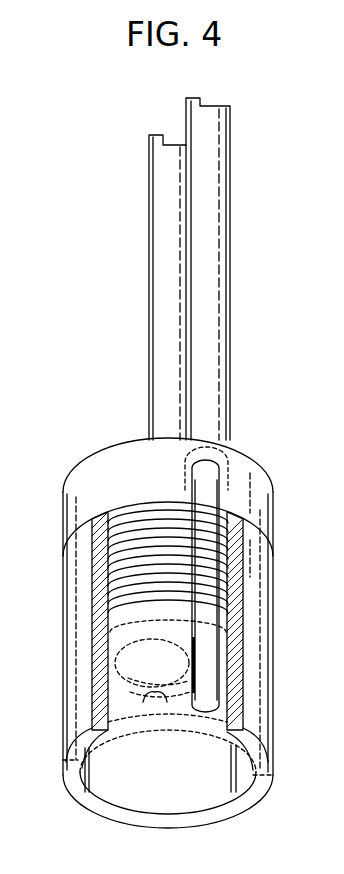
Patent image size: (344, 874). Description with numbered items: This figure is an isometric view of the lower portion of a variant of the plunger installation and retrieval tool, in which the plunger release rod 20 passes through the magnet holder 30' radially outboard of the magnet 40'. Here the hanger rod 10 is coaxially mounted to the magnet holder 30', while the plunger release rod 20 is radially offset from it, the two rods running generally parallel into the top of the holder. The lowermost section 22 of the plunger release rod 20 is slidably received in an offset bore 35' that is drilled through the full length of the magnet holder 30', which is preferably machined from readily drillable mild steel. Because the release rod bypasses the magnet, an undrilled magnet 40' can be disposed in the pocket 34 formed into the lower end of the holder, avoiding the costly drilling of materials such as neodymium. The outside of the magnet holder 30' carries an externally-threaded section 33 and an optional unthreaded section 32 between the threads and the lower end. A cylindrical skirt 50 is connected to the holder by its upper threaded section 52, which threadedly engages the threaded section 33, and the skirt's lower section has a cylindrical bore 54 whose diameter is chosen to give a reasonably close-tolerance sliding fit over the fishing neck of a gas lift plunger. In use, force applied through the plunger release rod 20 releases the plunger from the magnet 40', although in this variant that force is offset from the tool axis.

The hanger rod 10 is at (157, 318).
The plunger release rod 20 is at (223, 350).
The magnet holder 30' is at (198, 606).
The unthreaded section 32 is at (92, 625).
The threaded section 33 is at (126, 548).
The offset bore 35' is at (151, 554).
The upper threaded section 52 is at (108, 590).
The cylindrical skirt 50 is at (263, 660).
The lowermost section 22 is at (199, 706).
The pocket 34 is at (150, 702).
The magnet 40' is at (167, 745).
The cylindrical bore 54 is at (213, 798).